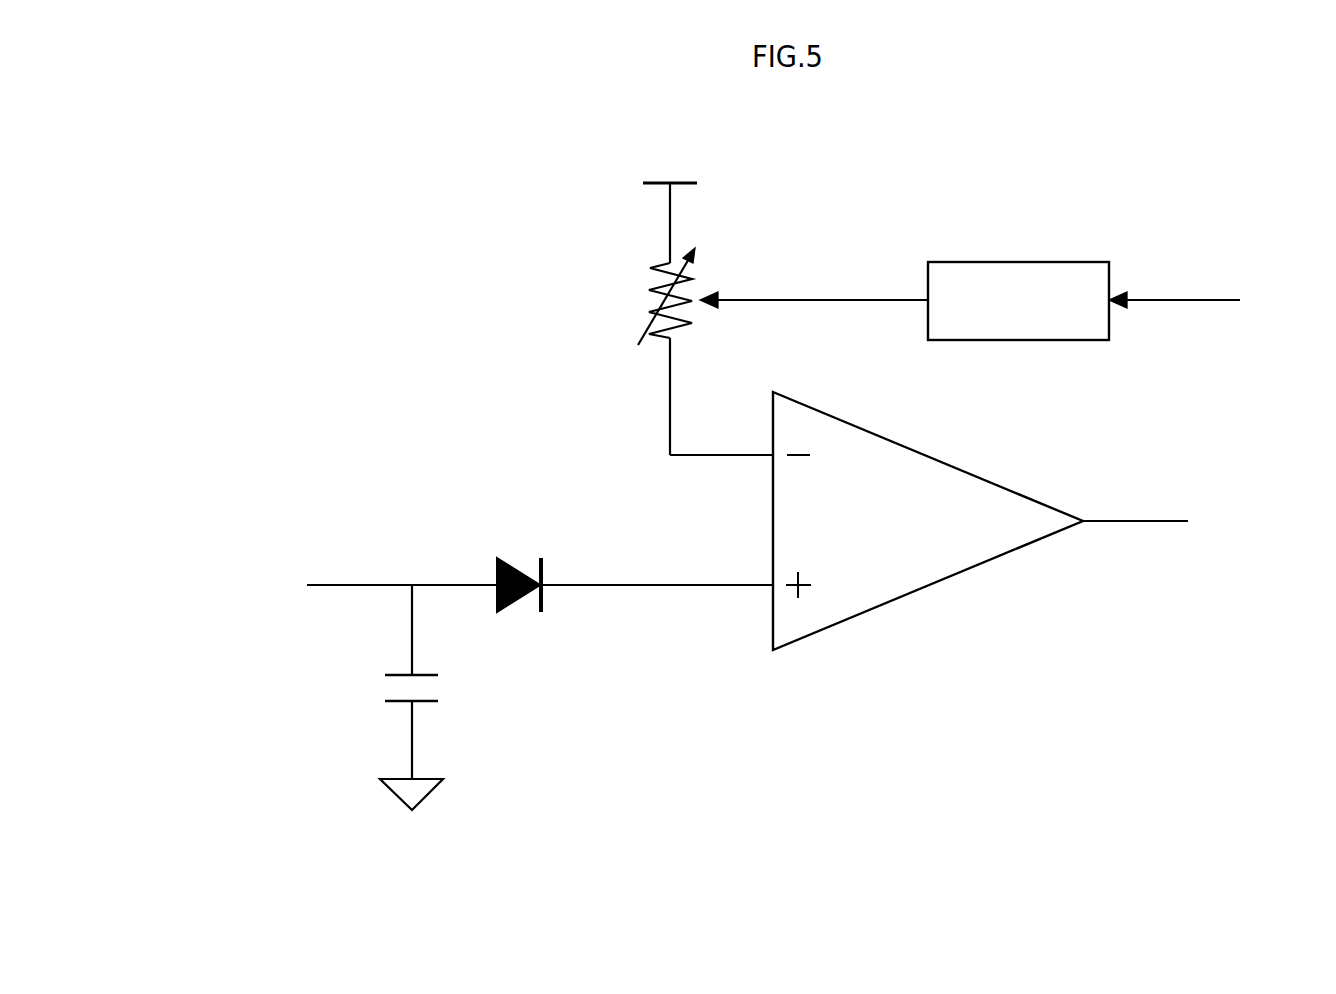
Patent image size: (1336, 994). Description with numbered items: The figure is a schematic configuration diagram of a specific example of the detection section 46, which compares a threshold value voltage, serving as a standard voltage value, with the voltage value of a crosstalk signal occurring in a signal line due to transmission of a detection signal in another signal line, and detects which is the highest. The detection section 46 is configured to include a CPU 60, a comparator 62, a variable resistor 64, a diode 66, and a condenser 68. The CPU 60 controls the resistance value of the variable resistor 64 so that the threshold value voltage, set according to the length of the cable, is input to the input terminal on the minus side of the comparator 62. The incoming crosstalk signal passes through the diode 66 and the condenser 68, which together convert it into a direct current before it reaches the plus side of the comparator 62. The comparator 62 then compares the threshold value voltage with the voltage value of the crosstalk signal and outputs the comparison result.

The detection section 46 is at (1045, 107).
The CPU 60 is at (1057, 262).
The comparator 62 is at (980, 477).
The variable resistor 64 is at (728, 261).
The diode 66 is at (544, 570).
The condenser 68 is at (420, 675).